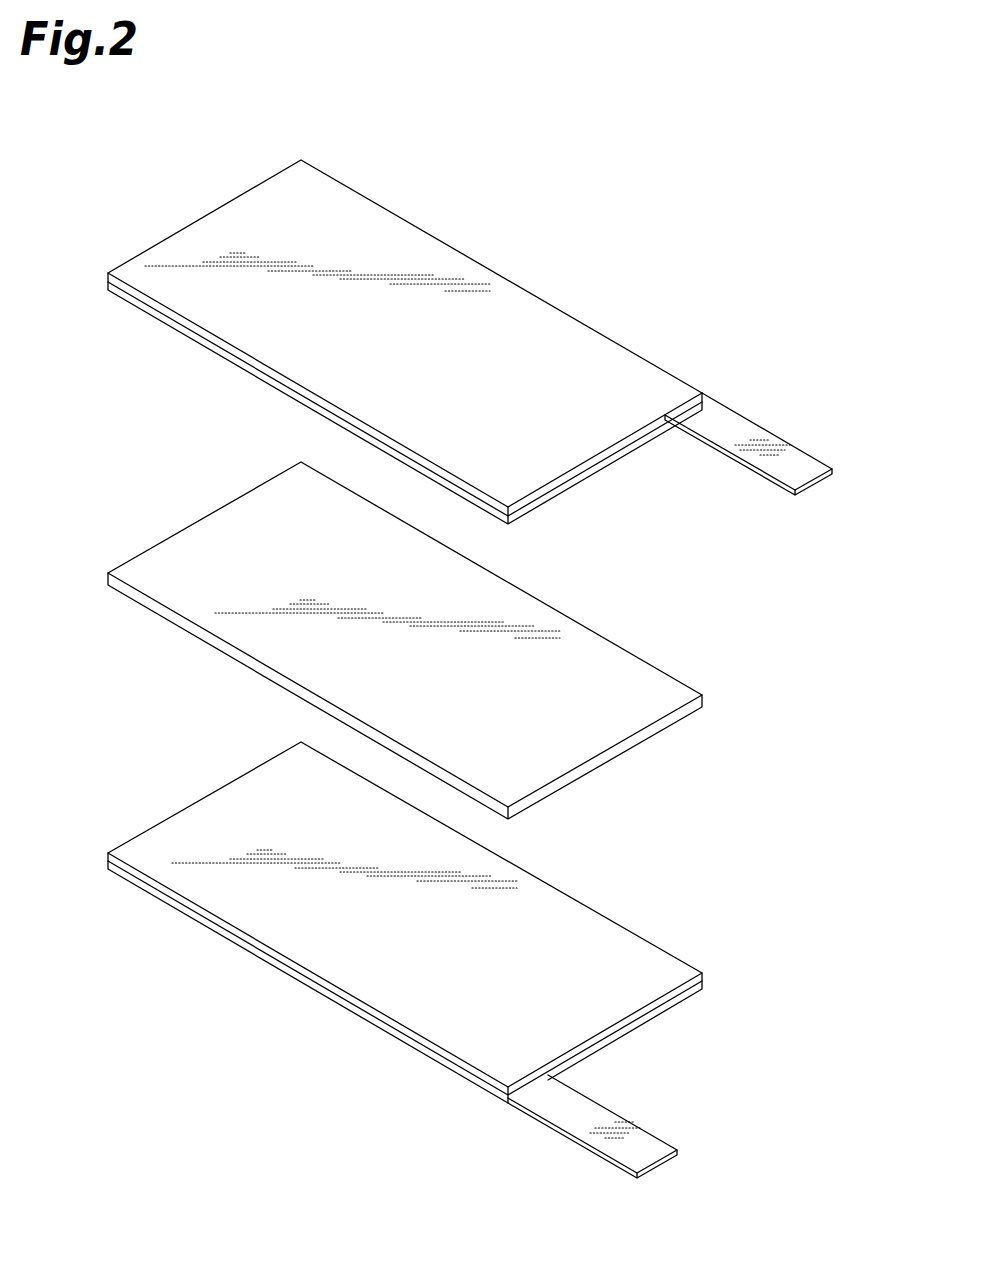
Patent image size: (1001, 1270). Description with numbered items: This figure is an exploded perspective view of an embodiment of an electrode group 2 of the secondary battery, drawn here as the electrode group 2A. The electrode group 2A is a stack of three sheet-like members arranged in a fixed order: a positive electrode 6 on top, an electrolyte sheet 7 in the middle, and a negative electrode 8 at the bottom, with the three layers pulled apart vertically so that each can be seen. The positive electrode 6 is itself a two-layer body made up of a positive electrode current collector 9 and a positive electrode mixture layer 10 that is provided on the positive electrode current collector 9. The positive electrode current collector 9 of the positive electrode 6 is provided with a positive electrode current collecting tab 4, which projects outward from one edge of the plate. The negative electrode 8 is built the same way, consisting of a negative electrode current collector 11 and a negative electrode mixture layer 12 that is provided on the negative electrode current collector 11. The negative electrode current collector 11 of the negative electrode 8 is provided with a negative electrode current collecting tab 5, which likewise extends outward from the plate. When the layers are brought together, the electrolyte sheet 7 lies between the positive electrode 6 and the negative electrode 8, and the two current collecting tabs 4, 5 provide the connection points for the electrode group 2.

The electrode group 2A is at (698, 170).
The electrode group 2 is at (487, 639).
The positive electrode current collecting tab 4 is at (798, 473).
The negative electrode current collecting tab 5 is at (637, 1153).
The positive electrode 6 is at (673, 325).
The electrolyte sheet 7 is at (638, 675).
The negative electrode 8 is at (672, 928).
The positive electrode current collector 9 is at (342, 203).
The positive electrode mixture layer 10 is at (593, 472).
The negative electrode current collector 11 is at (607, 1047).
The negative electrode mixture layer 12 is at (627, 988).